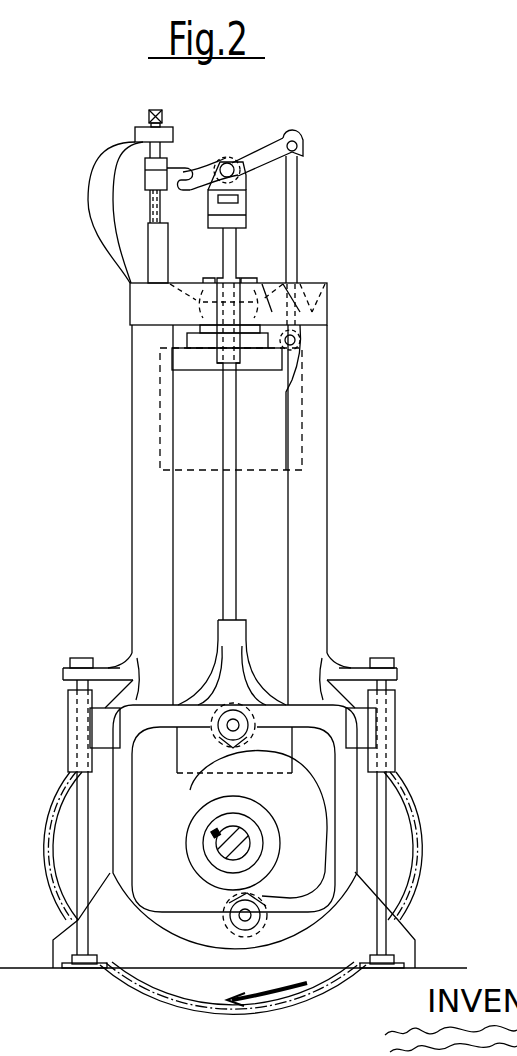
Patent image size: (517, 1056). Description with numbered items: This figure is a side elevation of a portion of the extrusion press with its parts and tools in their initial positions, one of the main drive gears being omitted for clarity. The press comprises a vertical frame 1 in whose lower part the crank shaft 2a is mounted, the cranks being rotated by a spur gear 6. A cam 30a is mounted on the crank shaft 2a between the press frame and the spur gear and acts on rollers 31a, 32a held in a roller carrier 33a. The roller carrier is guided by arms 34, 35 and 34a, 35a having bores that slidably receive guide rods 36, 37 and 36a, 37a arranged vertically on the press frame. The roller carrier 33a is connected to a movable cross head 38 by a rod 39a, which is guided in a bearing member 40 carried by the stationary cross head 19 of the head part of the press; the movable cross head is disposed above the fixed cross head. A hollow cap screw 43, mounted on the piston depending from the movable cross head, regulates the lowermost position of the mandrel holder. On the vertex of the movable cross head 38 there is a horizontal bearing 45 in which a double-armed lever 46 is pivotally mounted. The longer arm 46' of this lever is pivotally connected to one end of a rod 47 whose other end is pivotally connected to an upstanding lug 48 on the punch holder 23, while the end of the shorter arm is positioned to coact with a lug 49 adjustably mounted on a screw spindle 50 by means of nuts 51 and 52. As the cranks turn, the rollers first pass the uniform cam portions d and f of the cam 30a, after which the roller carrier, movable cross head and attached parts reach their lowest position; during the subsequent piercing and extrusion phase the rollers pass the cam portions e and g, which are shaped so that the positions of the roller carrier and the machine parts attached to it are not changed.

The press frame 1 is at (137, 505).
The stationary cross head 19 is at (137, 298).
The rod 39a is at (233, 528).
The bearing member 40 is at (227, 352).
The hollow cap screw 43 is at (185, 362).
The punch holder 23 is at (185, 413).
The upstanding lug 48 is at (293, 367).
The nut 52 is at (150, 162).
The nut 51 is at (150, 195).
The screw spindle 50 is at (157, 215).
The lug 49 is at (177, 180).
The double-armed lever 46 is at (233, 147).
The horizontal bearing 45 is at (240, 168).
The longer arm 46' is at (272, 134).
The movable cross head 38 is at (242, 210).
The rod 47 is at (294, 255).
The cam 30a is at (288, 800).
The uniform cam portion d is at (197, 790).
The roller 31a is at (228, 740).
The roller 32a is at (228, 898).
The cam portion e is at (188, 853).
The crank shaft 2a is at (283, 845).
The cam portion g is at (297, 782).
The uniform cam portion f is at (302, 895).
The arm 34 is at (75, 755).
The arm 34a is at (80, 728).
The arm 35 is at (395, 748).
The arm 35a is at (382, 723).
The guide rod 36a is at (80, 838).
The guide rod 37a is at (383, 825).
The spur gear 6 is at (410, 842).
The guide rod 36 is at (85, 898).
The guide rod 37 is at (380, 896).
The roller carrier 33a is at (173, 928).